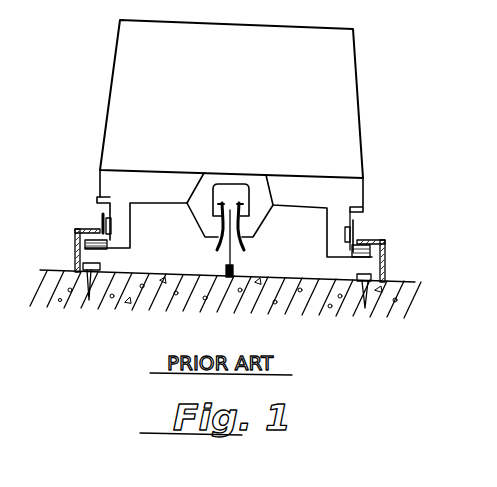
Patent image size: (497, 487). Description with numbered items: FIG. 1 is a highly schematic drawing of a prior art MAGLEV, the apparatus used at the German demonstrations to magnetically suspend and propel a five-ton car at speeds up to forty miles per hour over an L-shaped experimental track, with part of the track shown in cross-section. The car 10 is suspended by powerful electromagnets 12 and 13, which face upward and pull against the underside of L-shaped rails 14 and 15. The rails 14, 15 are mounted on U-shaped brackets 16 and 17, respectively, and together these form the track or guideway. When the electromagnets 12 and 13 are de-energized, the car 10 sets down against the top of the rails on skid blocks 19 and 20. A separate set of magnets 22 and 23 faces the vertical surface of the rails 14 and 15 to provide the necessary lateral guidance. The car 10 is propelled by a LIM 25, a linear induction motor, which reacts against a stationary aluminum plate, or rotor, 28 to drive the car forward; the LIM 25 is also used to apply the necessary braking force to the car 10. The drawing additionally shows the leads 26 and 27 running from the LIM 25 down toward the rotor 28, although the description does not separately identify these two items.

The car 10 is at (366, 70).
The electromagnet 12 is at (108, 250).
The electromagnet 13 is at (357, 260).
The L-shaped rail 14 is at (102, 216).
The L-shaped rail 15 is at (355, 224).
The U-shaped bracket 16 is at (75, 250).
The U-shaped bracket 17 is at (387, 255).
The skid block 19 is at (100, 198).
The skid block 20 is at (366, 207).
The lateral guidance magnet 22 is at (116, 225).
The lateral guidance magnet 23 is at (325, 236).
The LIM 25 is at (197, 236).
The lead wire 26 is at (223, 203).
The lead wire 27 is at (240, 203).
The stationary aluminum plate (rotor) 28 is at (233, 253).